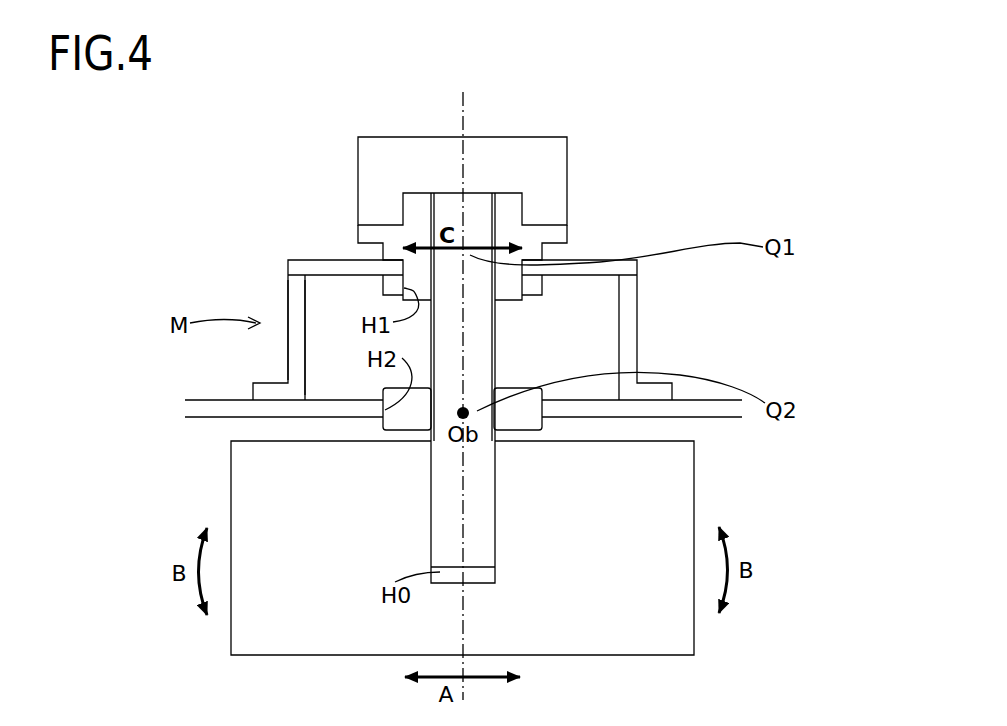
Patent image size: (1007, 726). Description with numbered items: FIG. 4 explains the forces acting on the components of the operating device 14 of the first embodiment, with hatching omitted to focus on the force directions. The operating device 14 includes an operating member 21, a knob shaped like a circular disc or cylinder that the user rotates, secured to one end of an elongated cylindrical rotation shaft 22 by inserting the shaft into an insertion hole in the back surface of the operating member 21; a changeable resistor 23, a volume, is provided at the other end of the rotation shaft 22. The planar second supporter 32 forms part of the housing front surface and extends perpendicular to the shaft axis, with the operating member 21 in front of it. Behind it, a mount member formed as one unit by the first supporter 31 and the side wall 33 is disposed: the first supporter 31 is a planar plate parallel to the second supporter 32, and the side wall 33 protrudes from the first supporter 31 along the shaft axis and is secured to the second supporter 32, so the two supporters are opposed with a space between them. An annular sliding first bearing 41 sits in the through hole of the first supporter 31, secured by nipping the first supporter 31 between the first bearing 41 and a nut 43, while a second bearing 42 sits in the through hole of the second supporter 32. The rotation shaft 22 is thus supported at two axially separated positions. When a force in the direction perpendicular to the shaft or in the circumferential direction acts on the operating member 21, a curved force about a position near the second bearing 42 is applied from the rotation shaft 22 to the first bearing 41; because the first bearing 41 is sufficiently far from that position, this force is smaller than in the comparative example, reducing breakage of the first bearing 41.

The operating device 14 is at (318, 158).
The operating member 21 is at (231, 489).
The rotation shaft 22 is at (473, 195).
The changeable resistor 23 is at (567, 172).
The first supporter 31 is at (308, 263).
The second supporter 32 is at (185, 406).
The side wall 33 is at (298, 343).
The first bearing 41 is at (358, 231).
The second bearing 42 is at (383, 393).
The nut 43 is at (382, 289).